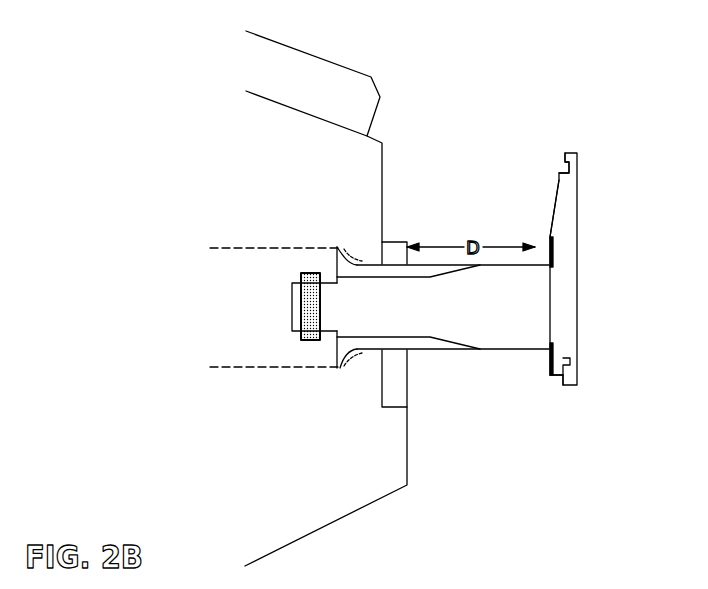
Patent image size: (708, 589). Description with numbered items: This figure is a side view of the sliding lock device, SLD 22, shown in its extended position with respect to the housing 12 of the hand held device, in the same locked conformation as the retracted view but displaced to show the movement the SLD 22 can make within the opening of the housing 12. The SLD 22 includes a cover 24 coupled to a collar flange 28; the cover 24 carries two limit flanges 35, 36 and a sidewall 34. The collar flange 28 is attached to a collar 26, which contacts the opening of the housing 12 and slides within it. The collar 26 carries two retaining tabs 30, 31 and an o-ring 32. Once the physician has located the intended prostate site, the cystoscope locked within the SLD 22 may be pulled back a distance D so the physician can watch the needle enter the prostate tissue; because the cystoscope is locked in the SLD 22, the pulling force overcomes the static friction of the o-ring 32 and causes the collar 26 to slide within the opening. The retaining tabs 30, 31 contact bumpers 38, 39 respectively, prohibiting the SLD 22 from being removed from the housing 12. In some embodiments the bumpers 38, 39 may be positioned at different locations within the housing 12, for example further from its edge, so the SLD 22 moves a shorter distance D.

The housing 12 is at (352, 475).
The SLD 22 is at (640, 106).
The cover 24 is at (575, 255).
The collar 26 is at (498, 340).
The collar flange 28 is at (555, 376).
The retaining tab 30 is at (337, 247).
The retaining tab 31 is at (340, 372).
The o-ring 32 is at (312, 343).
The sidewall 34 is at (555, 212).
The limit flange 35 is at (570, 373).
The limit flange 36 is at (568, 153).
The bumper 38 is at (357, 252).
The bumper 39 is at (356, 358).